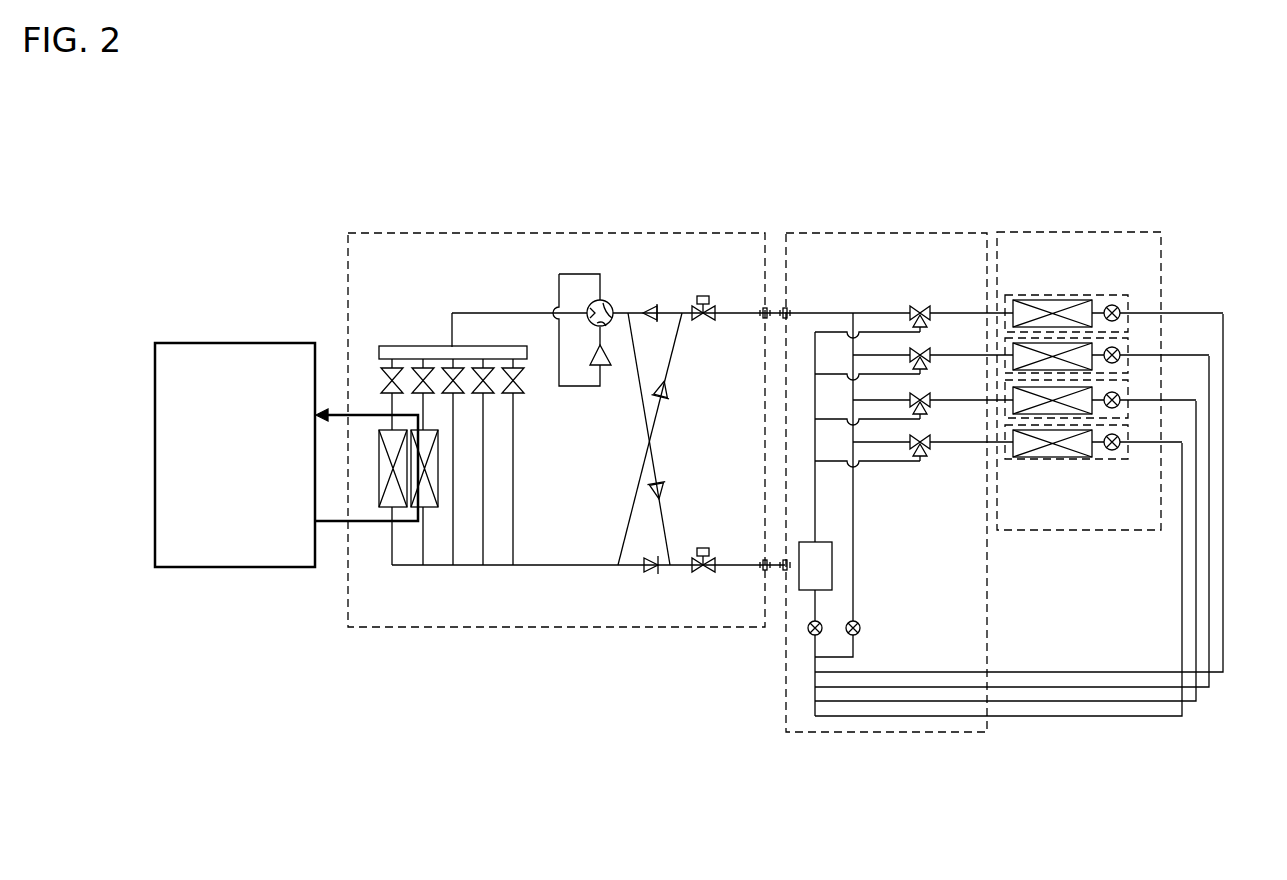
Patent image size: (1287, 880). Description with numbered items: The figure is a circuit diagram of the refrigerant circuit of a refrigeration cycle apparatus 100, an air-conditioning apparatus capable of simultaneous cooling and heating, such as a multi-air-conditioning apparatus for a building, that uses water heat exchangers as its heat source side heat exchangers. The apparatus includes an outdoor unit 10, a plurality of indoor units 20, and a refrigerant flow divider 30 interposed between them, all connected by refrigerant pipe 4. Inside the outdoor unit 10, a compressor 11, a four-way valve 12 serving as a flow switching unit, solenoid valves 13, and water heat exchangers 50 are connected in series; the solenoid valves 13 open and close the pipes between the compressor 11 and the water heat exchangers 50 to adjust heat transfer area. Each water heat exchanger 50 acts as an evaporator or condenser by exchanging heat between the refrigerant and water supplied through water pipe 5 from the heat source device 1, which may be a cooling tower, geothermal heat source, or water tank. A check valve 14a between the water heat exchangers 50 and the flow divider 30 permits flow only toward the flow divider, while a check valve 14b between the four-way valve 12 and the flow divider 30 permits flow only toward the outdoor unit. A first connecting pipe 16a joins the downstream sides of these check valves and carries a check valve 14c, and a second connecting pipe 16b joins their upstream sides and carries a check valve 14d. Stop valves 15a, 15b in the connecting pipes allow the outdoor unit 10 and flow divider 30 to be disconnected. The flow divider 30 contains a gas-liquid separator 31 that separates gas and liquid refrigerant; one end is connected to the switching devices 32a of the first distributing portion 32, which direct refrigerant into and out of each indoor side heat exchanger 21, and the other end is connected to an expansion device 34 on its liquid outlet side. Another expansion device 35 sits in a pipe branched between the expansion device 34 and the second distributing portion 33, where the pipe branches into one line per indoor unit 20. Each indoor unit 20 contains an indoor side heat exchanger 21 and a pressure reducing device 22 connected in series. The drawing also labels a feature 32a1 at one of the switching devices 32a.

The heat source device 1 is at (233, 343).
The refrigerant pipe 4 is at (547, 567).
The water pipe 5 is at (360, 522).
The outdoor unit 10 is at (536, 628).
The compressor 11 is at (590, 367).
The four-way valve 12 is at (605, 300).
The solenoid valves 13 is at (385, 347).
The check valve 14a is at (648, 572).
The check valve 14b is at (648, 305).
The check valve 14c is at (665, 488).
The check valve 14d is at (672, 392).
The stop valve 15a is at (702, 577).
The stop valve 15b is at (703, 296).
The first connecting pipe 16a is at (668, 540).
The second connecting pipe 16b is at (627, 522).
The indoor unit 20 is at (1105, 381).
The indoor side heat exchanger 21 is at (1045, 300).
The pressure reducing device 22 is at (1112, 305).
The refrigerant flow divider 30 is at (900, 733).
The gas-liquid separator 31 is at (832, 572).
The first distributing portion 32 is at (896, 379).
The switching device 32a is at (923, 308).
The three-way valve port 32a1 is at (912, 458).
The second distributing portion 33 is at (805, 710).
The expansion device 34 is at (806, 630).
The expansion device 35 is at (861, 628).
The water heat exchanger 50 is at (396, 508).
The refrigeration cycle apparatus 100 is at (1180, 218).